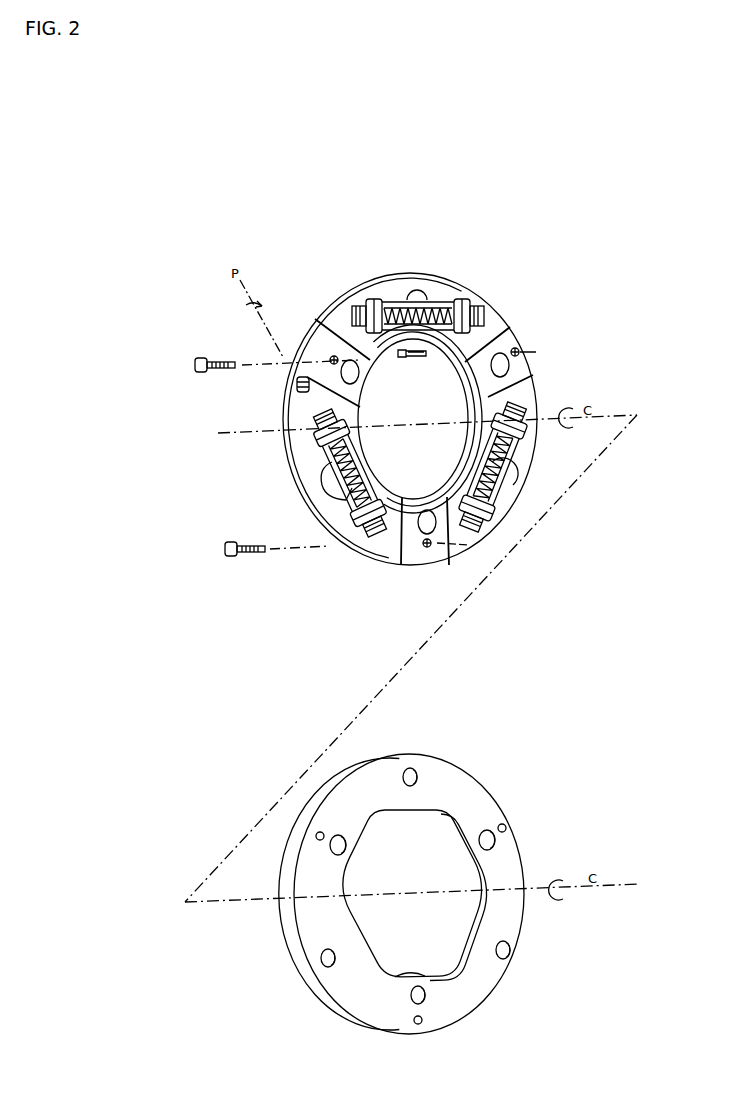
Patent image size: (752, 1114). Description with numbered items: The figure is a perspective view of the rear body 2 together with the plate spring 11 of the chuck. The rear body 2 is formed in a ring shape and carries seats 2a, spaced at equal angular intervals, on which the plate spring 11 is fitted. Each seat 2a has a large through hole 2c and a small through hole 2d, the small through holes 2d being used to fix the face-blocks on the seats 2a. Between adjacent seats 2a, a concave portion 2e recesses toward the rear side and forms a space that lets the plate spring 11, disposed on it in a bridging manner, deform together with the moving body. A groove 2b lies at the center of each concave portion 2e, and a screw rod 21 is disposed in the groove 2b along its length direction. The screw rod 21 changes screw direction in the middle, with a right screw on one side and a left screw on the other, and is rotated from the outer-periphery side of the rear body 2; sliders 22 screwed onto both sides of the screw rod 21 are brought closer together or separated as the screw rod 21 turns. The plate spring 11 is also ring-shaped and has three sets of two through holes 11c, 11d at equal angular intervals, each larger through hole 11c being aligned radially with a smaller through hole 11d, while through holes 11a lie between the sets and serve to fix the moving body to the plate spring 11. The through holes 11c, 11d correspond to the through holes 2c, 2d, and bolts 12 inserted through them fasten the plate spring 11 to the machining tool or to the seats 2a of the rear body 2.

The rear body 2 is at (393, 275).
The seat 2a is at (328, 338).
The groove 2b is at (327, 477).
The through hole 2c is at (370, 378).
The through hole 2d is at (330, 362).
The concave portion 2e is at (305, 398).
The plate spring 11 is at (452, 763).
The through hole 11a is at (405, 768).
The through hole 11c is at (486, 830).
The through hole 11d is at (317, 834).
The bolt 12 is at (195, 365).
The screw rod 21 is at (345, 512).
The slider 22 is at (322, 445).